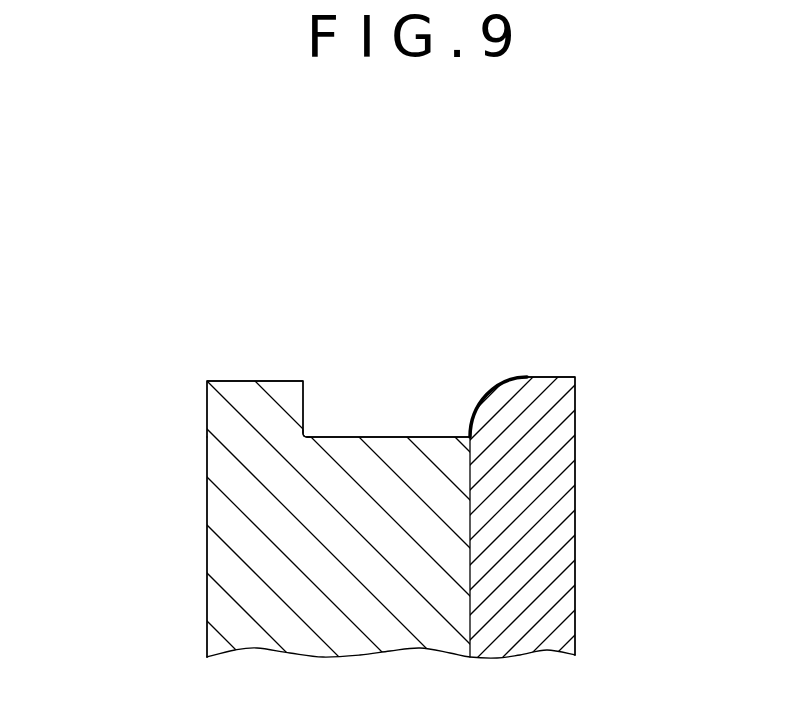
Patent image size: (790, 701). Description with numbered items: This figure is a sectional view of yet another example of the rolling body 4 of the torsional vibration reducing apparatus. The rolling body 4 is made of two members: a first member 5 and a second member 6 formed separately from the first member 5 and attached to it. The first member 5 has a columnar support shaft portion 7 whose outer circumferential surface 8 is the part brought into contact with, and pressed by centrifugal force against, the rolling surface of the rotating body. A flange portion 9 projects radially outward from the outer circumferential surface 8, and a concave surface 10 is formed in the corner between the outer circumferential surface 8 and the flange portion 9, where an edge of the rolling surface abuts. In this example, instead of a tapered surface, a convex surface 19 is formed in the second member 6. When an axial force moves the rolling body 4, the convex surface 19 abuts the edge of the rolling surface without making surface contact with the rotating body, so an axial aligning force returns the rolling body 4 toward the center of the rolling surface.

The rolling body 4 is at (581, 379).
The first member 5 is at (102, 433).
The second member 6 is at (548, 575).
The support shaft portion 7 is at (232, 420).
The outer circumferential surface 8 is at (400, 437).
The flange portion 9 is at (350, 552).
The concave surface 10 is at (307, 433).
The convex surface 19 is at (500, 388).